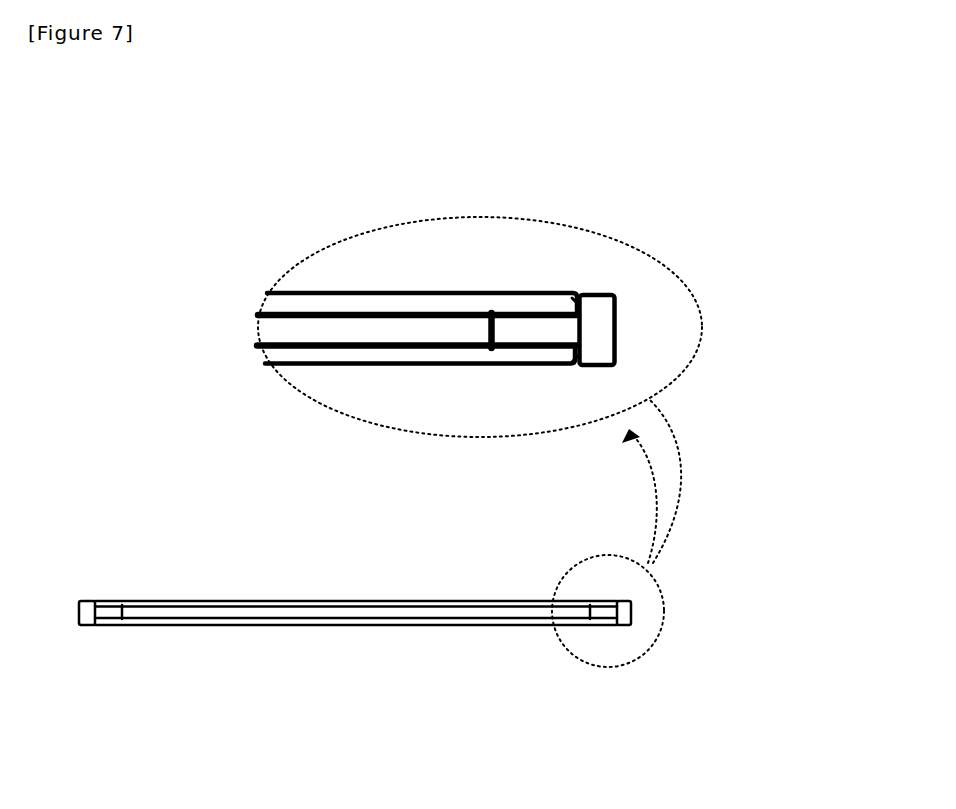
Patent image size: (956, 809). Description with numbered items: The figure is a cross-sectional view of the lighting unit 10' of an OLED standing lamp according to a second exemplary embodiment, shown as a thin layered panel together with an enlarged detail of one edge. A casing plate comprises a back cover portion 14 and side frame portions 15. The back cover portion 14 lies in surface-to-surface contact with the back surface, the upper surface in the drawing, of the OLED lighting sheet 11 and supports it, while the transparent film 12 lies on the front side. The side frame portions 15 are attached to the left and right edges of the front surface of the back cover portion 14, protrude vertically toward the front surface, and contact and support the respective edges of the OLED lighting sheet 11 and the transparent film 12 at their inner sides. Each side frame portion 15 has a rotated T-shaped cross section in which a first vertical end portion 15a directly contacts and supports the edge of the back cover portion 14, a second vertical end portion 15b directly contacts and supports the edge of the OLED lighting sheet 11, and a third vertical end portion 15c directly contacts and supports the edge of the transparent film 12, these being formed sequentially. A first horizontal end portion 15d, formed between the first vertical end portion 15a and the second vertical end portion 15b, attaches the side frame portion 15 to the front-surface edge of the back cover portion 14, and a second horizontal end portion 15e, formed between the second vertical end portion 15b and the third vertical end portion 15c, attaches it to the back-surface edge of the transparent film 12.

The lighting unit 10' is at (145, 485).
The OLED lighting sheet 11 is at (310, 335).
The transparent film 12 is at (383, 358).
The back cover portion 14 is at (385, 293).
The side frame portion 15 is at (618, 317).
The first vertical end portion 15a is at (573, 303).
The second vertical end portion 15b is at (490, 335).
The third vertical end portion 15c is at (570, 365).
The first horizontal end portion 15d is at (528, 310).
The second horizontal end portion 15e is at (533, 348).